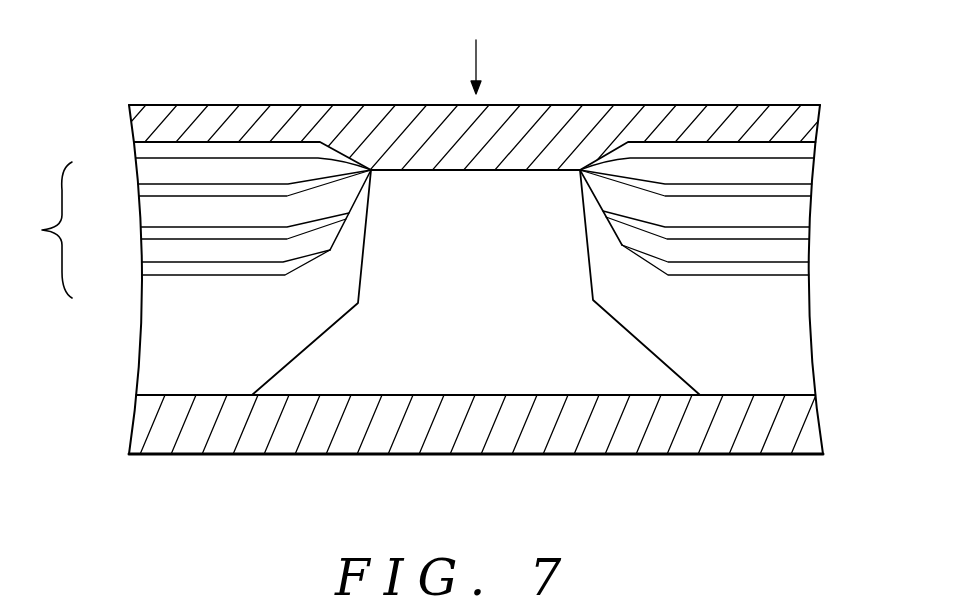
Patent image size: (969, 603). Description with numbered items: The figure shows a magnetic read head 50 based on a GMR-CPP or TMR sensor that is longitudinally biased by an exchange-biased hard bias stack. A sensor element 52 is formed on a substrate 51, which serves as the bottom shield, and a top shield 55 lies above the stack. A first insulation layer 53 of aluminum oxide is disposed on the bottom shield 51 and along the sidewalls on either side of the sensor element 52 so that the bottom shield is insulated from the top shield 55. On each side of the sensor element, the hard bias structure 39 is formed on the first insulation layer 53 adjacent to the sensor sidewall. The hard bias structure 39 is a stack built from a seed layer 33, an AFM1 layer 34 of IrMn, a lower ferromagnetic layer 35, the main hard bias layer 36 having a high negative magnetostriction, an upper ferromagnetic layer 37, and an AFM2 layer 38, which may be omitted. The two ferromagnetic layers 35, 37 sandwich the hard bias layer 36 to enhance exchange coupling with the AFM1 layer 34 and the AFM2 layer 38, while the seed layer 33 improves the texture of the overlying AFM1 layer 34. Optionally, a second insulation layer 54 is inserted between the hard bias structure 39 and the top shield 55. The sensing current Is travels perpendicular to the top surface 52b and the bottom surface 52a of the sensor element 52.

The magnetic read head 50 is at (128, 87).
The substrate (bottom shield) 51 is at (807, 428).
The GMR-CPP or TMR sensor element 52 is at (465, 363).
The bottom surface 52a is at (370, 396).
The top surface 52b is at (540, 160).
The first insulation layer 53 is at (157, 330).
The second insulation layer 54 is at (147, 147).
The top shield 55 is at (803, 125).
The seed layer 33 is at (148, 273).
The AFM1 layer 34 is at (163, 250).
The ferromagnetic layer 35 is at (150, 235).
The hard bias layer 36 is at (157, 213).
The ferromagnetic layer 37 is at (152, 192).
The AFM2 layer 38 is at (157, 172).
The hard bias structure 39 is at (40, 230).
The sensing current Is is at (481, 56).